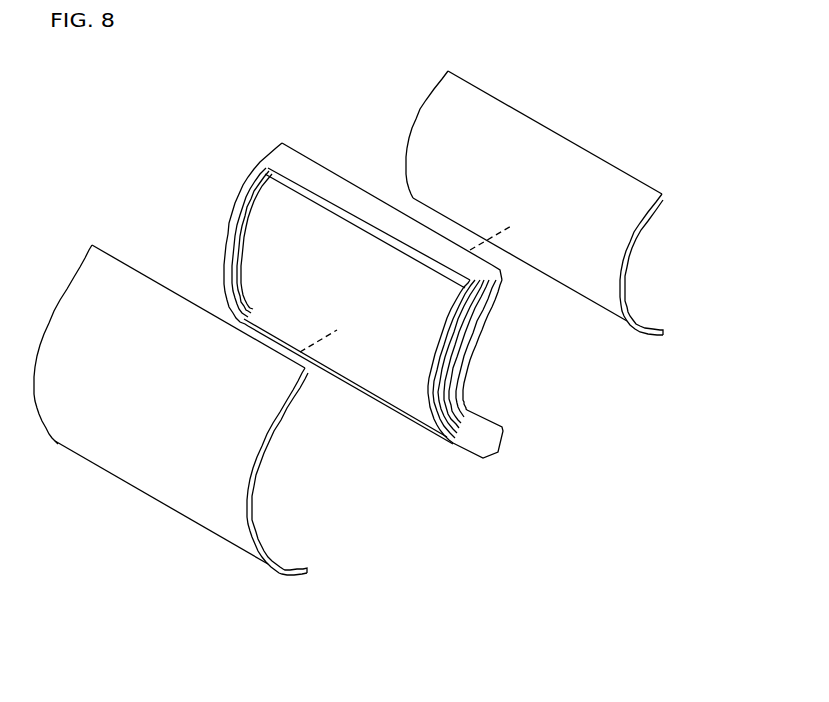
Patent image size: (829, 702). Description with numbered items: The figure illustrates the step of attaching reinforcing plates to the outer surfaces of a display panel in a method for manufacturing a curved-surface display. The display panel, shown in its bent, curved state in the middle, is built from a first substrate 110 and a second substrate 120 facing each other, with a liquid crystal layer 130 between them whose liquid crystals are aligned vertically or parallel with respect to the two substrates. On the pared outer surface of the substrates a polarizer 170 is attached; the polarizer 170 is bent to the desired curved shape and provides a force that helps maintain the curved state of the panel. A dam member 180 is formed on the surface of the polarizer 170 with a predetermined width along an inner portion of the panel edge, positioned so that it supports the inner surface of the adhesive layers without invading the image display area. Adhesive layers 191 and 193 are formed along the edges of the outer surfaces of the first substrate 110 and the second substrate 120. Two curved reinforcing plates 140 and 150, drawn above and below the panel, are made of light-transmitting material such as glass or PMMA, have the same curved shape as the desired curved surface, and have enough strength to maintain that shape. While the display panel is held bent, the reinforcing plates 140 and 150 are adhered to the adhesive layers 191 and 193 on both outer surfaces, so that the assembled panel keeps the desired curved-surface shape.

The first substrate 110 is at (500, 430).
The second substrate 120 is at (497, 457).
The liquid crystal layer 130 is at (497, 443).
The reinforcing plate 140 is at (533, 133).
The reinforcing plate 150 is at (173, 310).
The polarizer 170 is at (465, 397).
The dam member 180 is at (355, 222).
The adhesive layer 191 is at (478, 427).
The adhesive layer 193 is at (477, 458).